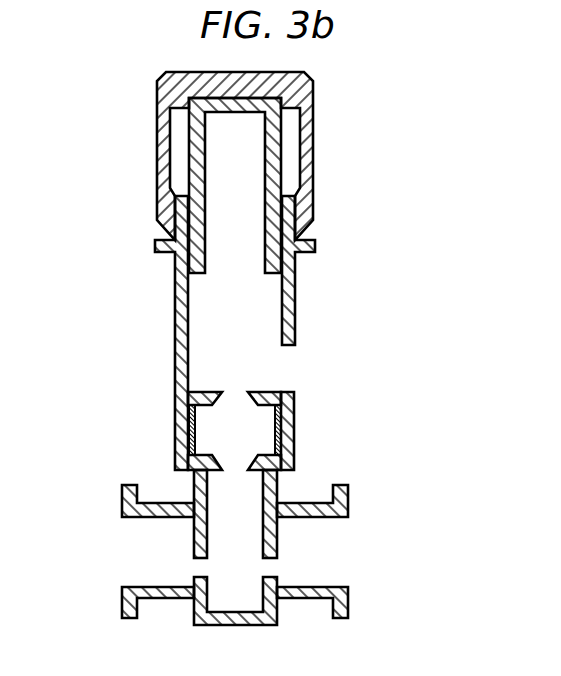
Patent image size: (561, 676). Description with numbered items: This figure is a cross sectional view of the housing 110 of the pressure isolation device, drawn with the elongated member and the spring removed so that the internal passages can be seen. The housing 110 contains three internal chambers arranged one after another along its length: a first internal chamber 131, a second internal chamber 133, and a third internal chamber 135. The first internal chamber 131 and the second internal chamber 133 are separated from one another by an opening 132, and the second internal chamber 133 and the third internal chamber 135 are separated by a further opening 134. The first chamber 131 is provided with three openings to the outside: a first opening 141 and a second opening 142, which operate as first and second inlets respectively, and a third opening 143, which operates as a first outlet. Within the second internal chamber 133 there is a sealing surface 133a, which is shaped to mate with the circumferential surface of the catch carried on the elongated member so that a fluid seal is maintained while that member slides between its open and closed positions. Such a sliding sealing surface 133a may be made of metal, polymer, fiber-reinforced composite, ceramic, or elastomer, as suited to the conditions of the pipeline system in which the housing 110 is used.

The housing 110 is at (213, 348).
The first internal chamber 131 is at (219, 504).
The opening 132 is at (235, 463).
The second internal chamber 133 is at (233, 418).
The sealing surface 133a is at (277, 428).
The opening 134 is at (235, 398).
The third internal chamber 135 is at (233, 330).
The first opening 141 is at (196, 522).
The second opening 142 is at (196, 567).
The third opening 143 is at (273, 567).